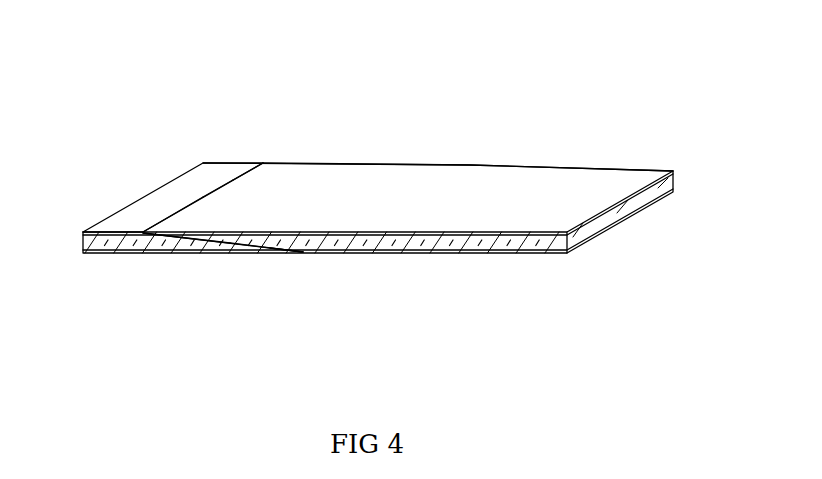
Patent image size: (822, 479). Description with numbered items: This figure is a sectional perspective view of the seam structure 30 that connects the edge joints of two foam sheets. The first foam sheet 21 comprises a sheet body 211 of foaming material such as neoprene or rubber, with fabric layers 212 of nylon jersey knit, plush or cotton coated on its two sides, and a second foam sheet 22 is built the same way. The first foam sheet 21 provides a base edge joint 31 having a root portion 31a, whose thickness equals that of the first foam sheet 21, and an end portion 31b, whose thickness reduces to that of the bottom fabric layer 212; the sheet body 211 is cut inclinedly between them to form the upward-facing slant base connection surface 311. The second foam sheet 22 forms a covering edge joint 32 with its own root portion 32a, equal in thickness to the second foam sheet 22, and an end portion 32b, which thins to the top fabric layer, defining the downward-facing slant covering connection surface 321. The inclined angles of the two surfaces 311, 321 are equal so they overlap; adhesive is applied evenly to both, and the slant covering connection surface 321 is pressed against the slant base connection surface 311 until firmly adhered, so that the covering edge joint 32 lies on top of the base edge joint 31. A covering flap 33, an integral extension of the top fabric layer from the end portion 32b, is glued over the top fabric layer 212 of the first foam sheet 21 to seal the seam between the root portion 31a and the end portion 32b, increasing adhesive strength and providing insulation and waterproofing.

The first foam sheet 21 is at (140, 177).
The sheet body 211 is at (110, 242).
The fabric layer 212 is at (92, 258).
The second foam sheet 22 is at (490, 151).
The seam structure 30 is at (97, 352).
The base edge joint 31 is at (268, 262).
The root portion 31a is at (189, 234).
The end portion 31b is at (287, 233).
The slant base connection surface 311 is at (250, 224).
The covering edge joint 32 is at (404, 86).
The root portion 32a is at (307, 250).
The end portion 32b is at (242, 236).
The slant covering connection surface 321 is at (297, 250).
The covering flap 33 is at (235, 188).